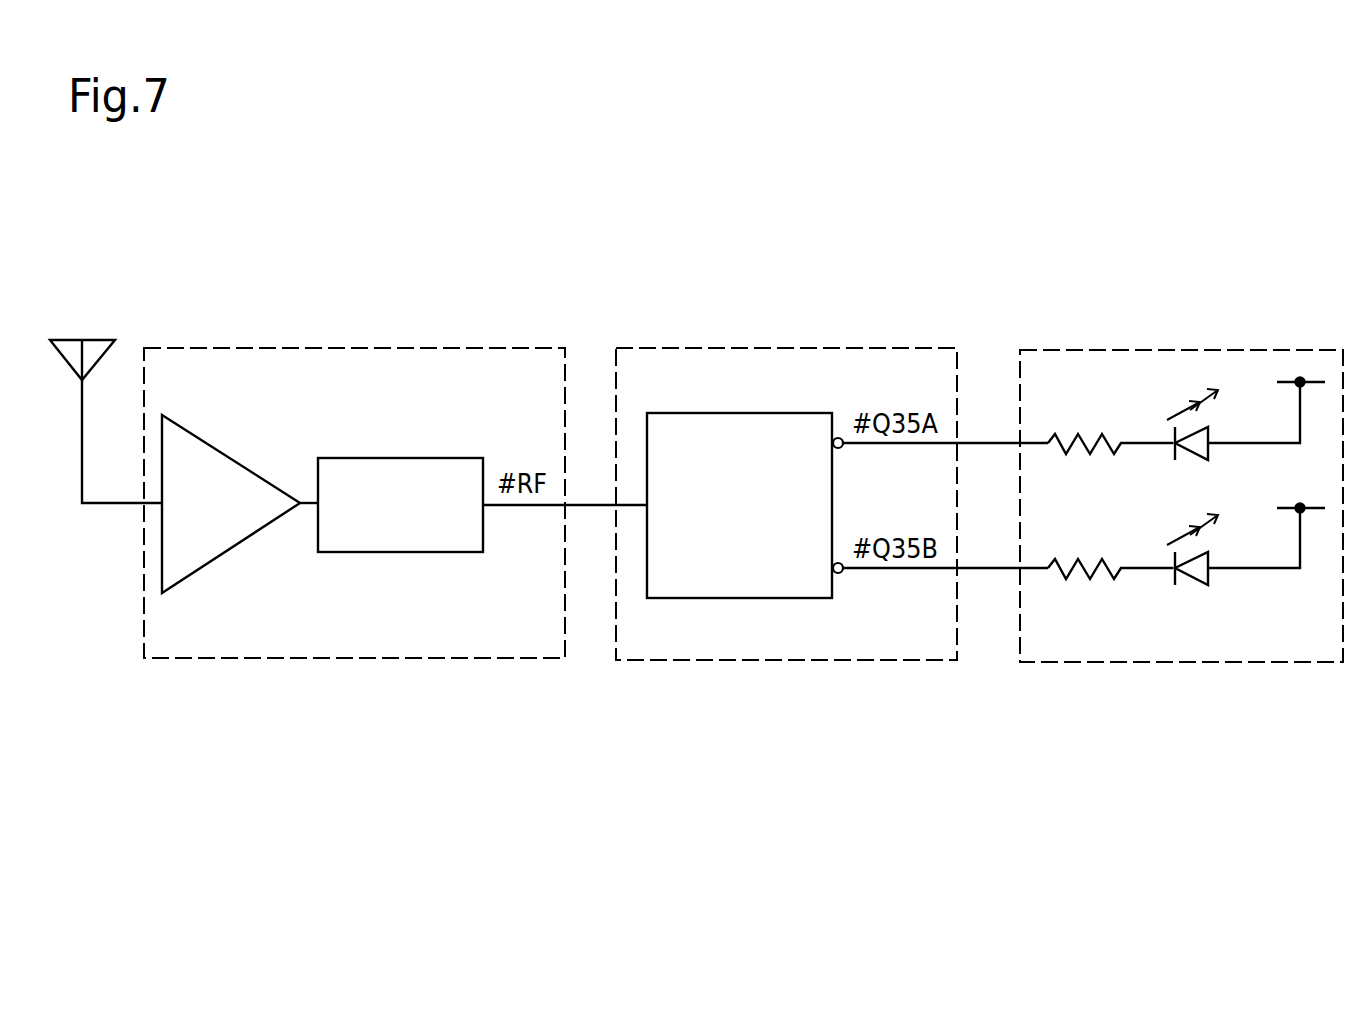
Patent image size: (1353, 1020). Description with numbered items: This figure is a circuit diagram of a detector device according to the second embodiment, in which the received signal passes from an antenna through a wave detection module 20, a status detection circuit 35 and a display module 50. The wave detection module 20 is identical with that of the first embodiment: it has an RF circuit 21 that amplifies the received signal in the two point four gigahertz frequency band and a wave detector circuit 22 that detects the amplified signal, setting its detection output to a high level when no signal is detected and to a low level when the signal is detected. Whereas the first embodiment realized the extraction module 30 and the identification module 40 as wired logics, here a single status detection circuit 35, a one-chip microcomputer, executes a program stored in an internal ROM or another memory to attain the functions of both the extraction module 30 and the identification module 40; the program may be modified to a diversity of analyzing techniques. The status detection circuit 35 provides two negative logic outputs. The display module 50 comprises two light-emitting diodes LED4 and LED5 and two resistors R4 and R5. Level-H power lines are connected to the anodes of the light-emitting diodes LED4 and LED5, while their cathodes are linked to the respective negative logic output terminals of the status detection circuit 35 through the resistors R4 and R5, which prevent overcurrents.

The wave detection module 20 is at (425, 348).
The RF circuit 21 is at (233, 460).
The wave detector circuit 22 is at (448, 458).
The extraction module 30 is at (786, 472).
The identification module 40 is at (780, 348).
The status detection circuit 35 is at (755, 413).
The display module 50 is at (1166, 350).
The resistor R4 is at (1066, 452).
The resistor R5 is at (1066, 577).
The light-emitting diode LED4 is at (1192, 458).
The light-emitting diode LED5 is at (1192, 583).